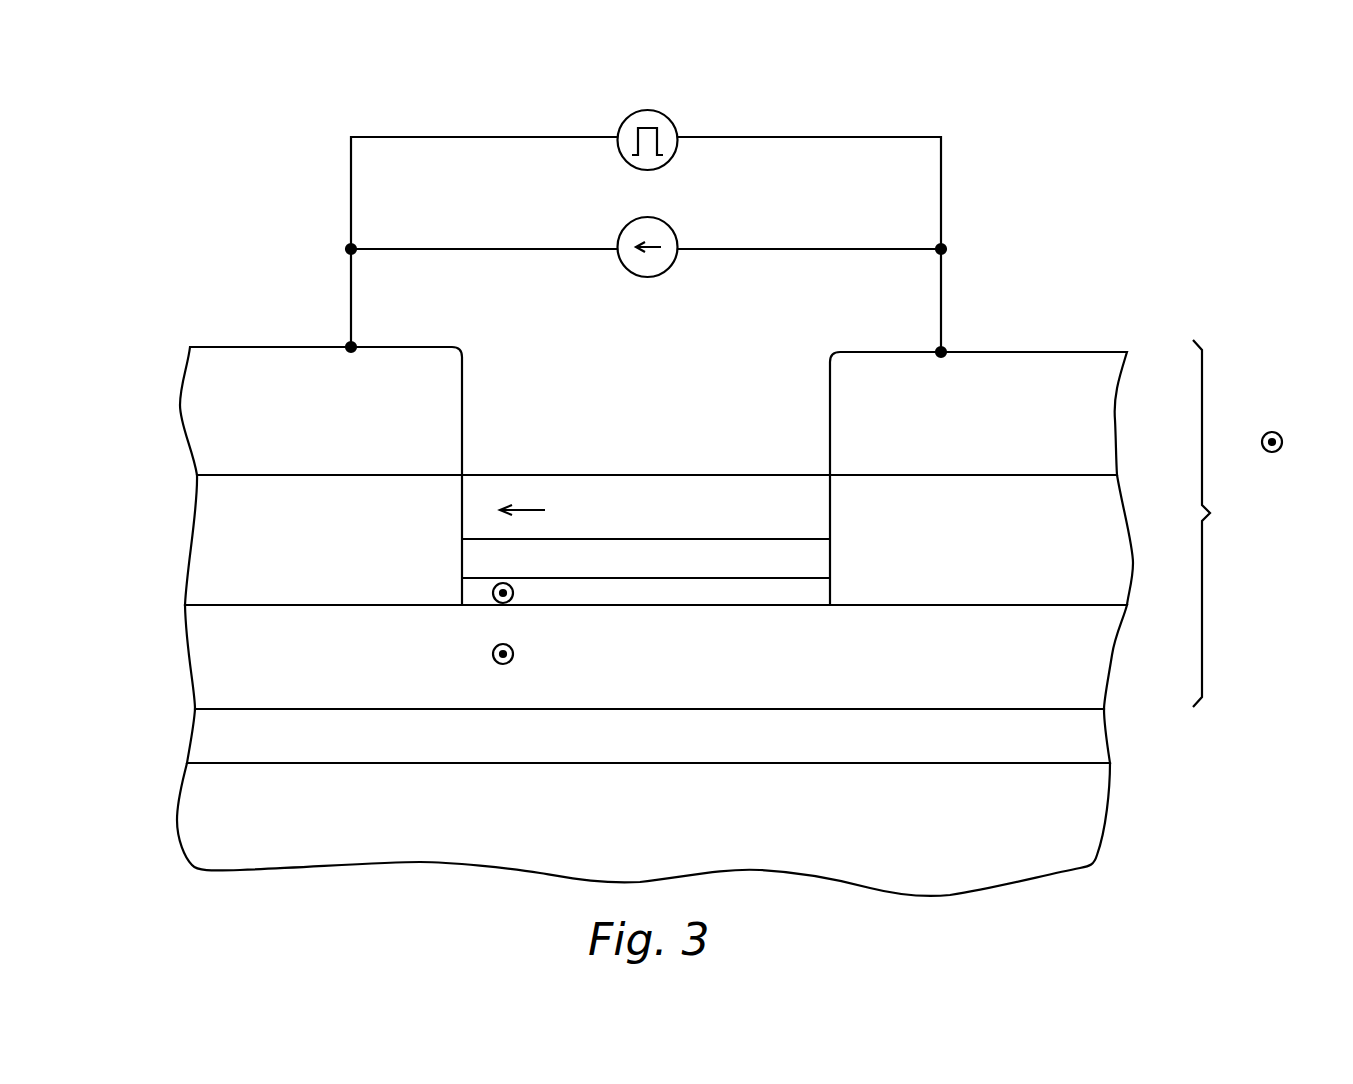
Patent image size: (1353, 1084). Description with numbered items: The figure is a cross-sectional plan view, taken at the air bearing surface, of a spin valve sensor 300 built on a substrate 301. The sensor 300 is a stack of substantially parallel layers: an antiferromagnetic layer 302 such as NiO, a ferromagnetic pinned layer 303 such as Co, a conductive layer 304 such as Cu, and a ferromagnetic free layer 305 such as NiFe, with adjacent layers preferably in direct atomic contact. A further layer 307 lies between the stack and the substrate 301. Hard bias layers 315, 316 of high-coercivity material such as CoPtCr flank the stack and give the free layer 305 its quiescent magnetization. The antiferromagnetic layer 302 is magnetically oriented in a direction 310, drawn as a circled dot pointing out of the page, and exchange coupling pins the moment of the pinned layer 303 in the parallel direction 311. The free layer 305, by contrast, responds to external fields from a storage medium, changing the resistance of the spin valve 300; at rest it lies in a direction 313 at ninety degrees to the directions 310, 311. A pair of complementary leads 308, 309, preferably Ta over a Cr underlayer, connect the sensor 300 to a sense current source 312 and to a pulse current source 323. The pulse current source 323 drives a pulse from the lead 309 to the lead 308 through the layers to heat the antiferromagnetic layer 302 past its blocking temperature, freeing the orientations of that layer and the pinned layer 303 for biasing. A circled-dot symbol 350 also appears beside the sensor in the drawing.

The spin valve sensor 300 is at (1224, 523).
The substrate 301 is at (1098, 839).
The antiferromagnetic layer 302 is at (1112, 644).
The ferromagnetic pinned layer 303 is at (803, 605).
The conductive layer 304 is at (803, 573).
The ferromagnetic free layer 305 is at (803, 523).
The buffer layer 307 is at (1098, 741).
The lead 308 is at (200, 411).
The lead 309 is at (1112, 391).
The direction 310 is at (513, 654).
The direction 311 is at (513, 593).
The sense current source 312 is at (666, 222).
The direction 313 is at (545, 510).
The hard bias layer 315 is at (200, 534).
The hard bias layer 316 is at (1112, 511).
The pulse current source 323 is at (664, 116).
The external magnetic field direction 350 is at (1280, 434).